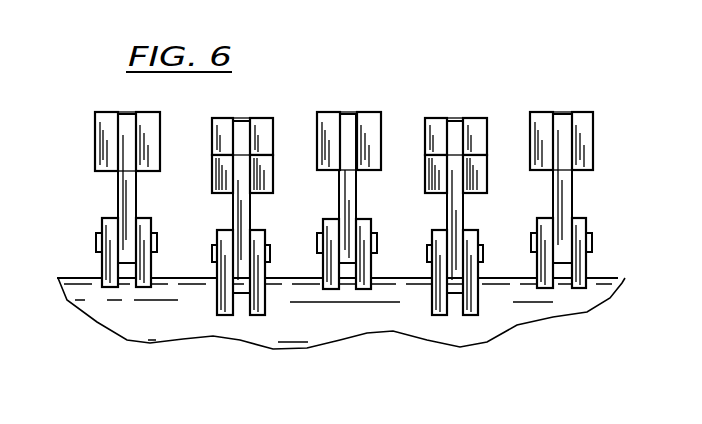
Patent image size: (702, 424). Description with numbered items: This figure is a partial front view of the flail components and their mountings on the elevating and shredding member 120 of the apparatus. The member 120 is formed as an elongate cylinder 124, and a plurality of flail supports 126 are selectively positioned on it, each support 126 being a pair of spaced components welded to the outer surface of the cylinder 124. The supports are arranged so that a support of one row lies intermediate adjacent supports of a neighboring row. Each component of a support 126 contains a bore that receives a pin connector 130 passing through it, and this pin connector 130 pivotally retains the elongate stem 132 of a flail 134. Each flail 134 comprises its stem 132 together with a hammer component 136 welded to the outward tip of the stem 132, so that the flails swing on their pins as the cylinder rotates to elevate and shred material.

The elevating and shredding member 120 is at (643, 53).
The elongate cylinder 124 is at (610, 281).
The flail supports 126 is at (110, 218).
The pin connector 130 is at (95, 242).
The elongate stem 132 is at (130, 190).
The flails 134 is at (108, 104).
The hammer components 136 is at (102, 139).